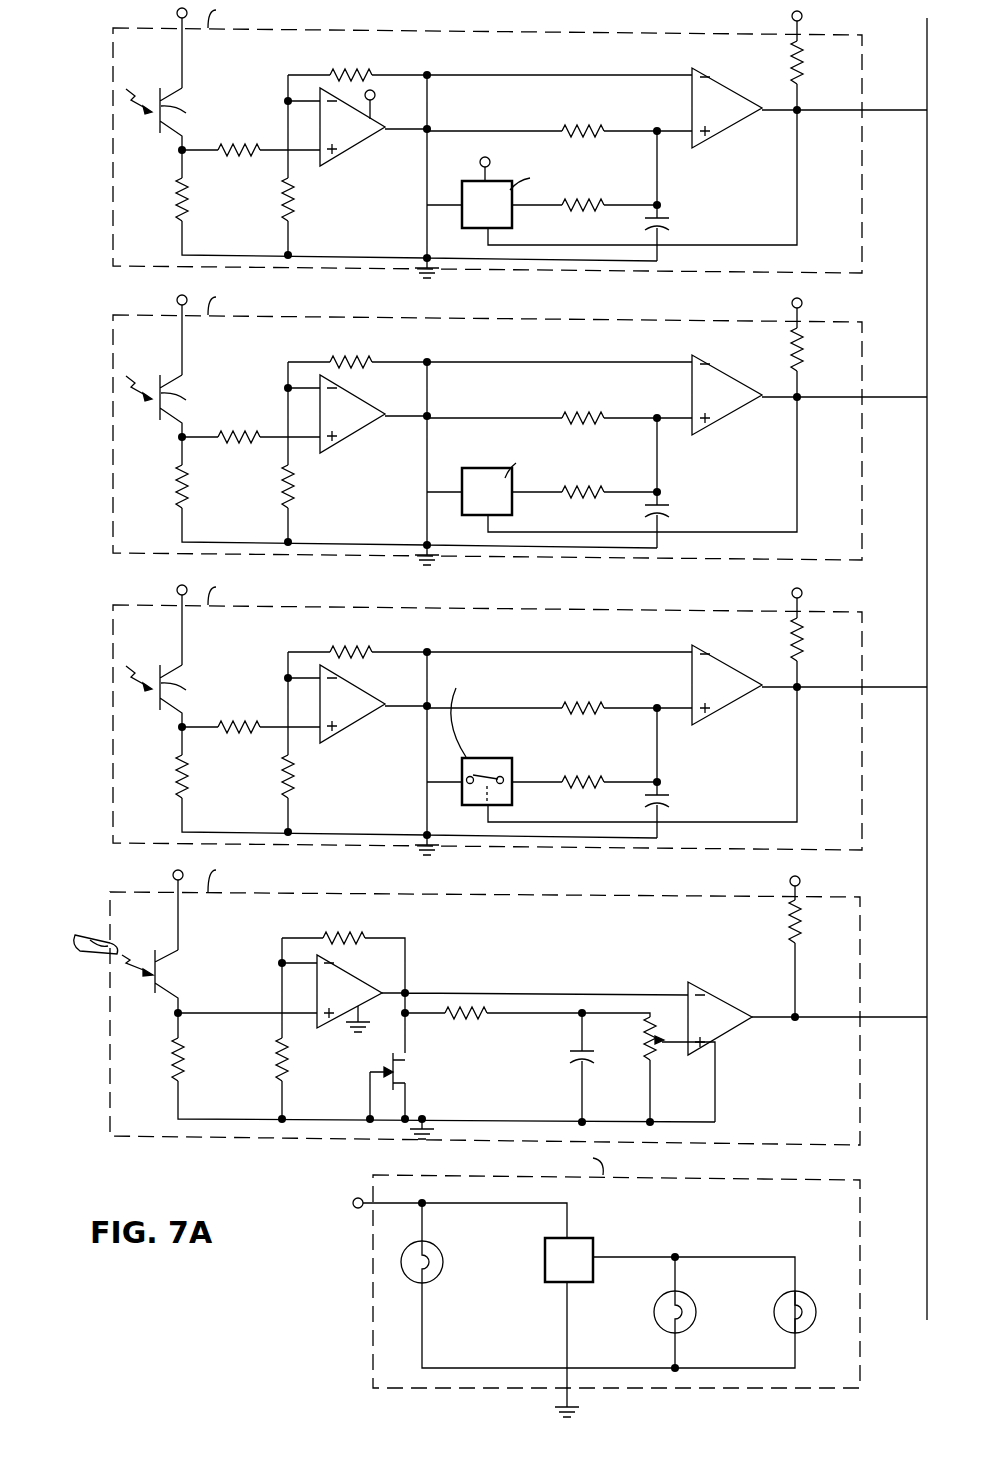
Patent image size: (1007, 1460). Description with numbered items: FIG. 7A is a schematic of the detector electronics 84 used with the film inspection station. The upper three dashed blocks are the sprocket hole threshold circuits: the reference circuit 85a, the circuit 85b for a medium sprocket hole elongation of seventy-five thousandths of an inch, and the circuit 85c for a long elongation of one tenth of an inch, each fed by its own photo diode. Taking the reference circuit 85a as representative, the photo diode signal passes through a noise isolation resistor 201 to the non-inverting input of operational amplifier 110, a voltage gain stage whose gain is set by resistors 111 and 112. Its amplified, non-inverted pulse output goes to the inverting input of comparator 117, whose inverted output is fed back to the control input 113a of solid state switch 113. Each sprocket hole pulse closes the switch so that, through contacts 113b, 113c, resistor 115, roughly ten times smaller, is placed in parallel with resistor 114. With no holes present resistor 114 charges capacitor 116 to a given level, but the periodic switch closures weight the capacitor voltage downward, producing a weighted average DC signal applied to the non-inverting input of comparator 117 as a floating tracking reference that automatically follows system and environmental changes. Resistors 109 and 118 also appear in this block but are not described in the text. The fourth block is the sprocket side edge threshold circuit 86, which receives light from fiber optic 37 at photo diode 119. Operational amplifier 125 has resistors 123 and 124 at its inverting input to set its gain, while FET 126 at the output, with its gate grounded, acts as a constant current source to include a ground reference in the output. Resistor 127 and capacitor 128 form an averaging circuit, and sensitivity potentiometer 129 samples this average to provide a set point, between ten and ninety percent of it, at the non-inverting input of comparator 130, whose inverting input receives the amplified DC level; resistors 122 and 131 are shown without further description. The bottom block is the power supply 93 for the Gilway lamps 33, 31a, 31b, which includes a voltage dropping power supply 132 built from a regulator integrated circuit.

The detector electronics 84 is at (112, 31).
The sprocket hole threshold circuit 85c is at (597, 35).
The sprocket hole threshold circuit 85b is at (605, 322).
The sprocket hole threshold circuit 85a is at (582, 610).
The sprocket side edge threshold circuit 86 is at (601, 897).
The power supply 93 is at (858, 1220).
The input resistor 201 is at (236, 725).
The emitter resistor 109 is at (190, 779).
The operational amplifier 110 is at (358, 710).
The resistor 111 is at (298, 781).
The resistor 112 is at (370, 652).
The solid state switch 113 is at (481, 780).
The control input 113a is at (486, 806).
The contact 113b is at (505, 778).
The contact 113c is at (466, 783).
The resistor 114 is at (583, 718).
The resistor 115 is at (575, 790).
The capacitor 116 is at (670, 803).
The comparator 117 is at (725, 700).
The pull-up resistor 118 is at (810, 658).
The fiber optic 37 is at (93, 951).
The photo diode 119 is at (170, 978).
The emitter resistor 122 is at (186, 1050).
The resistor 123 is at (360, 937).
The resistor 124 is at (290, 1050).
The operational amplifier 125 is at (344, 985).
The FET 126 is at (408, 1067).
The resistor 127 is at (480, 1020).
The capacitor 128 is at (575, 1070).
The sensitivity potentiometer 129 is at (642, 1057).
The comparator 130 is at (712, 1004).
The pull-up resistor 131 is at (800, 945).
The voltage dropping power supply 132 is at (615, 1226).
The Gilway lamp 33 is at (440, 1272).
The Gilway lamp 31a is at (694, 1310).
The Gilway lamp 31b is at (817, 1305).